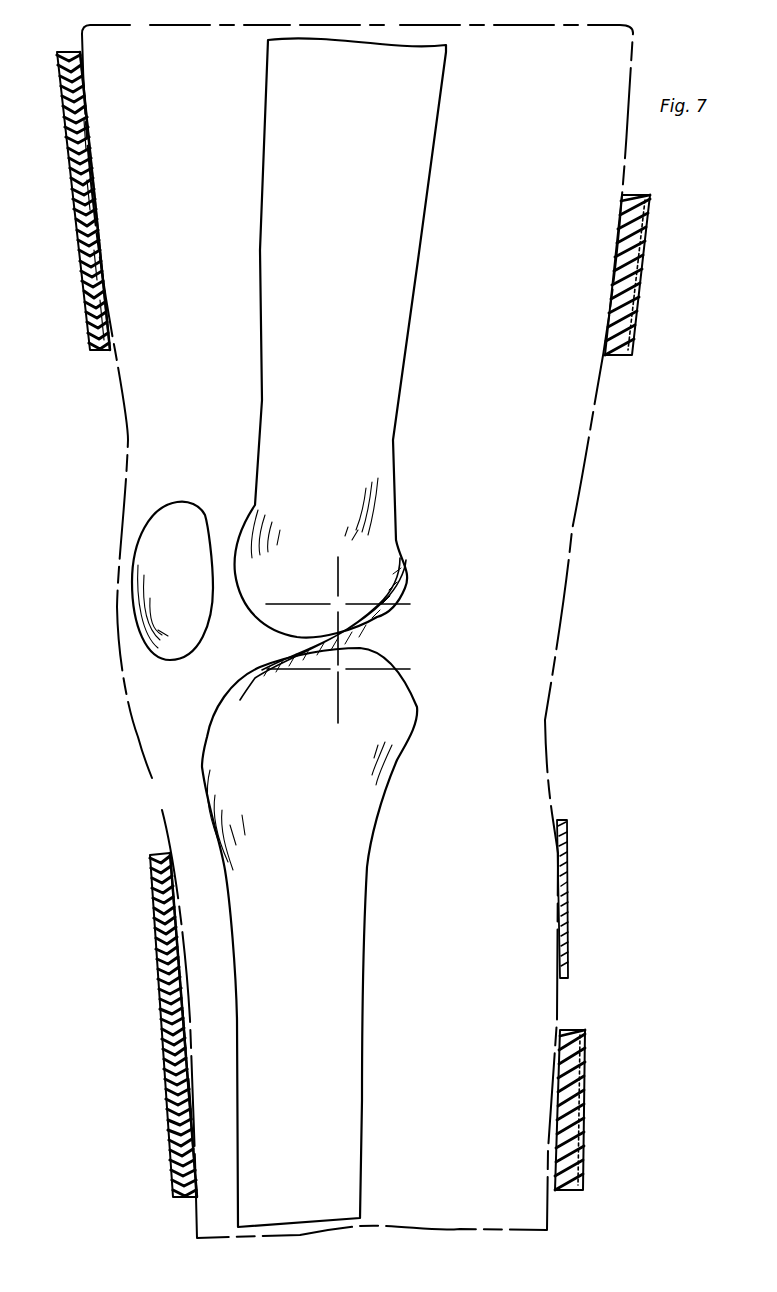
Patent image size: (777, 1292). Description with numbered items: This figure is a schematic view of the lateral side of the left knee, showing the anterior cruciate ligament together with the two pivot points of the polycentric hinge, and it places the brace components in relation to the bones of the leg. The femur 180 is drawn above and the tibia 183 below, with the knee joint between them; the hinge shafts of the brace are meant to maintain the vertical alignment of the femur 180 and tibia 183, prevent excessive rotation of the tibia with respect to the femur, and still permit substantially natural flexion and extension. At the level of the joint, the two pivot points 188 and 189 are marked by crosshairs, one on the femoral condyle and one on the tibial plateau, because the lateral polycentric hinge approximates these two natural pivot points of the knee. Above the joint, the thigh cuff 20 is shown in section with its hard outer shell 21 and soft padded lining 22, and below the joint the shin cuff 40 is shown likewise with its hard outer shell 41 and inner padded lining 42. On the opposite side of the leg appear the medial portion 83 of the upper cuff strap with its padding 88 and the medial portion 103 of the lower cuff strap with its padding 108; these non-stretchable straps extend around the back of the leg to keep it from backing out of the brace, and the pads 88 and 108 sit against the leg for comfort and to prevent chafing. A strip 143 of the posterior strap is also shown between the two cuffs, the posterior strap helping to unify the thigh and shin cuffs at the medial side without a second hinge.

The thigh cuff 20 is at (65, 201).
The hard outer shell 21 is at (62, 127).
The soft padded lining 22 is at (73, 165).
The shin cuff 40 is at (138, 1025).
The hard outer shell 41 is at (160, 943).
The inner padded lining 42 is at (165, 975).
The medial portion of upper cuff strap 83 is at (640, 272).
The padding 88 is at (646, 246).
The medial portion of lower cuff strap 103 is at (588, 1080).
The padding 108 is at (567, 1037).
The posterior strap element 143 is at (568, 912).
The femur 180 is at (350, 230).
The tibia 183 is at (312, 917).
The pivot point 188 is at (343, 602).
The pivot point 189 is at (350, 673).